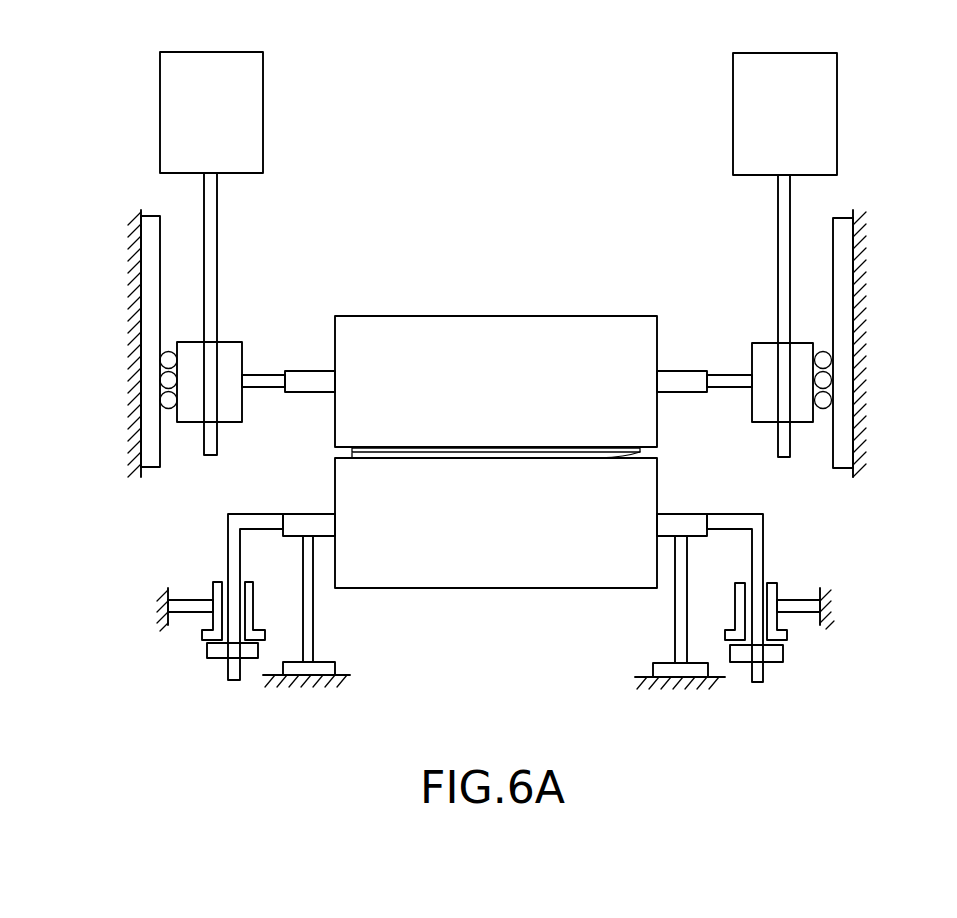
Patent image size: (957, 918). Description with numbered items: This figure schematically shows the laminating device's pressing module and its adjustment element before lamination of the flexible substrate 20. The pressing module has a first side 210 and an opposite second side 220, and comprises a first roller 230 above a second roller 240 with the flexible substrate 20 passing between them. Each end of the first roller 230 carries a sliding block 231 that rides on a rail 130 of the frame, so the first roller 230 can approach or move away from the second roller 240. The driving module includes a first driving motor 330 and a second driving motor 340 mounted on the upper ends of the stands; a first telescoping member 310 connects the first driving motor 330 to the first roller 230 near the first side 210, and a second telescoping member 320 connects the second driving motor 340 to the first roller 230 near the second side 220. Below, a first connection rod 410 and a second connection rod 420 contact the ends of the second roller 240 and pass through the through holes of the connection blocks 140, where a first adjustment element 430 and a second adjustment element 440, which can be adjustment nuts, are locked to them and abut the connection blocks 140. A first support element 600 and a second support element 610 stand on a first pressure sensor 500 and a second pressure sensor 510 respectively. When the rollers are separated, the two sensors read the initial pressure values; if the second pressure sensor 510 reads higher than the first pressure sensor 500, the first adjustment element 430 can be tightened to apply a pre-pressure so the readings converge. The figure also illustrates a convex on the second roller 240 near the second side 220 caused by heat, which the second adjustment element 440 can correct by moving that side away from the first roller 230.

The flexible substrate 20 is at (360, 448).
The rail 130 is at (148, 268).
The connection block 140 is at (205, 634).
The first side 210 is at (320, 322).
The second side 220 is at (674, 322).
The first roller 230 is at (481, 326).
The sliding block 231 is at (188, 378).
The second roller 240 is at (495, 565).
The first telescoping member 310 is at (210, 196).
The second telescoping member 320 is at (792, 196).
The first driving motor 330 is at (175, 117).
The second driving motor 340 is at (820, 118).
The first connection rod 410 is at (236, 550).
The second connection rod 420 is at (760, 552).
The first adjustment element 430 is at (208, 652).
The second adjustment element 440 is at (783, 653).
The first pressure sensor 500 is at (307, 682).
The second pressure sensor 510 is at (680, 683).
The first support element 600 is at (314, 627).
The second support element 610 is at (675, 627).